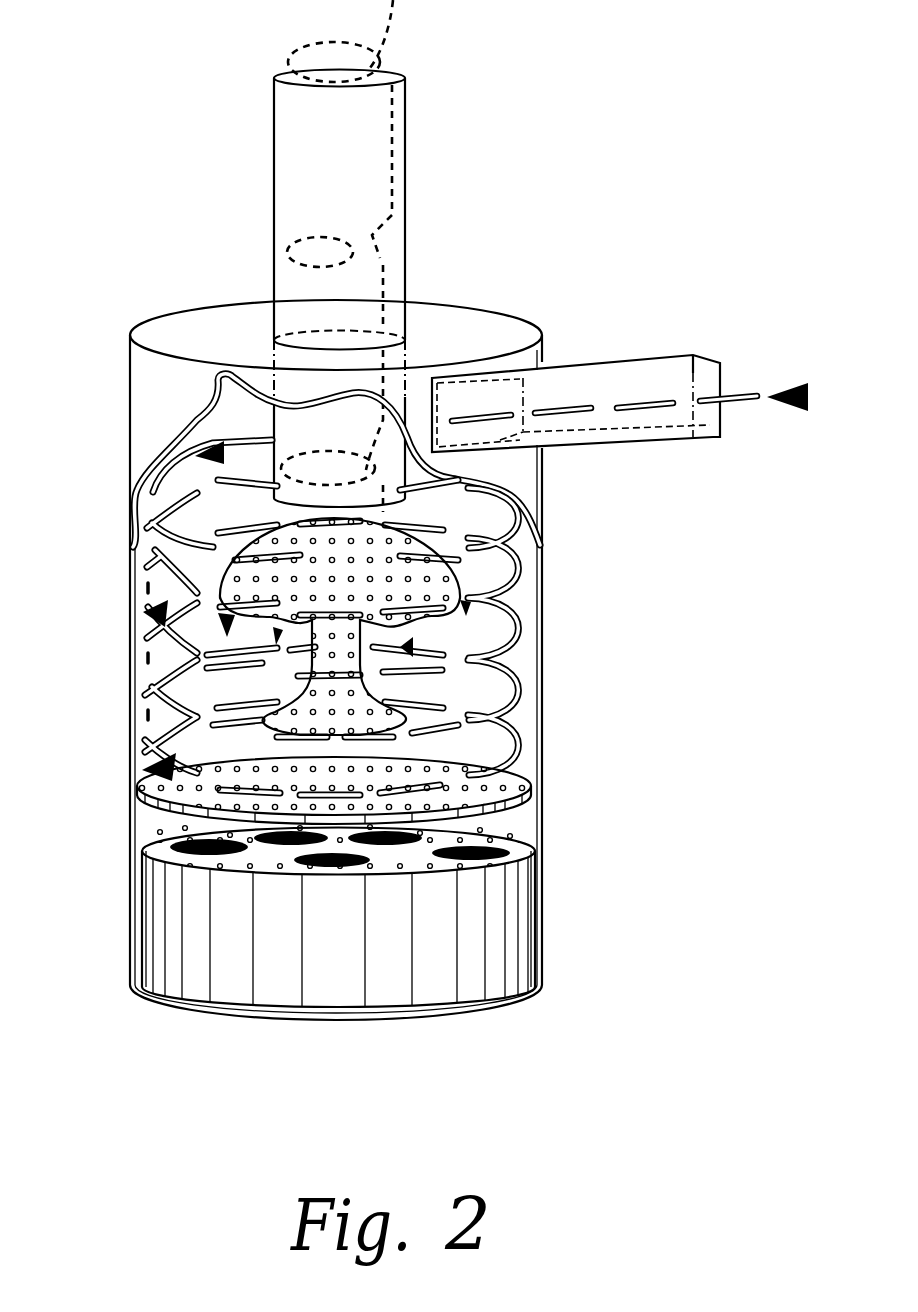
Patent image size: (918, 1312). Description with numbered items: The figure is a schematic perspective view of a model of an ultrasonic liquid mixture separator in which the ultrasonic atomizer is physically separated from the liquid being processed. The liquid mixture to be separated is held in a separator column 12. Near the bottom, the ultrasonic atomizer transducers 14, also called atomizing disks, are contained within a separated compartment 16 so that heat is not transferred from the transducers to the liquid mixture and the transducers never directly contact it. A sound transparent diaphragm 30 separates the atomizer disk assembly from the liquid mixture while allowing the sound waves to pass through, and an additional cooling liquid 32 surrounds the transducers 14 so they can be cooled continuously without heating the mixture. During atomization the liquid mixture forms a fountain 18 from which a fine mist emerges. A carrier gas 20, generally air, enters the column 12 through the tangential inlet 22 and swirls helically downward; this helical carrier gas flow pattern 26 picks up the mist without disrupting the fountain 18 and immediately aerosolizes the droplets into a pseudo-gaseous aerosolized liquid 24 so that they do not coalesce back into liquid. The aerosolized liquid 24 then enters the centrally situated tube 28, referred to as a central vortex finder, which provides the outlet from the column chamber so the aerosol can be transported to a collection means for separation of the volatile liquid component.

The separator column 12 is at (542, 500).
The ultrasonic atomizer transducers 14 is at (540, 866).
The separated compartment 16 is at (540, 826).
The fountain 18 is at (455, 647).
The carrier gas 20 is at (667, 438).
The tangential inlet 22 is at (340, 626).
The aerosolized liquid 24 is at (288, 250).
The helical carrier gas flow pattern 26 is at (133, 573).
The tube 28 is at (407, 268).
The sound transparent diaphragm 30 is at (165, 810).
The cooling liquid 32 is at (160, 830).